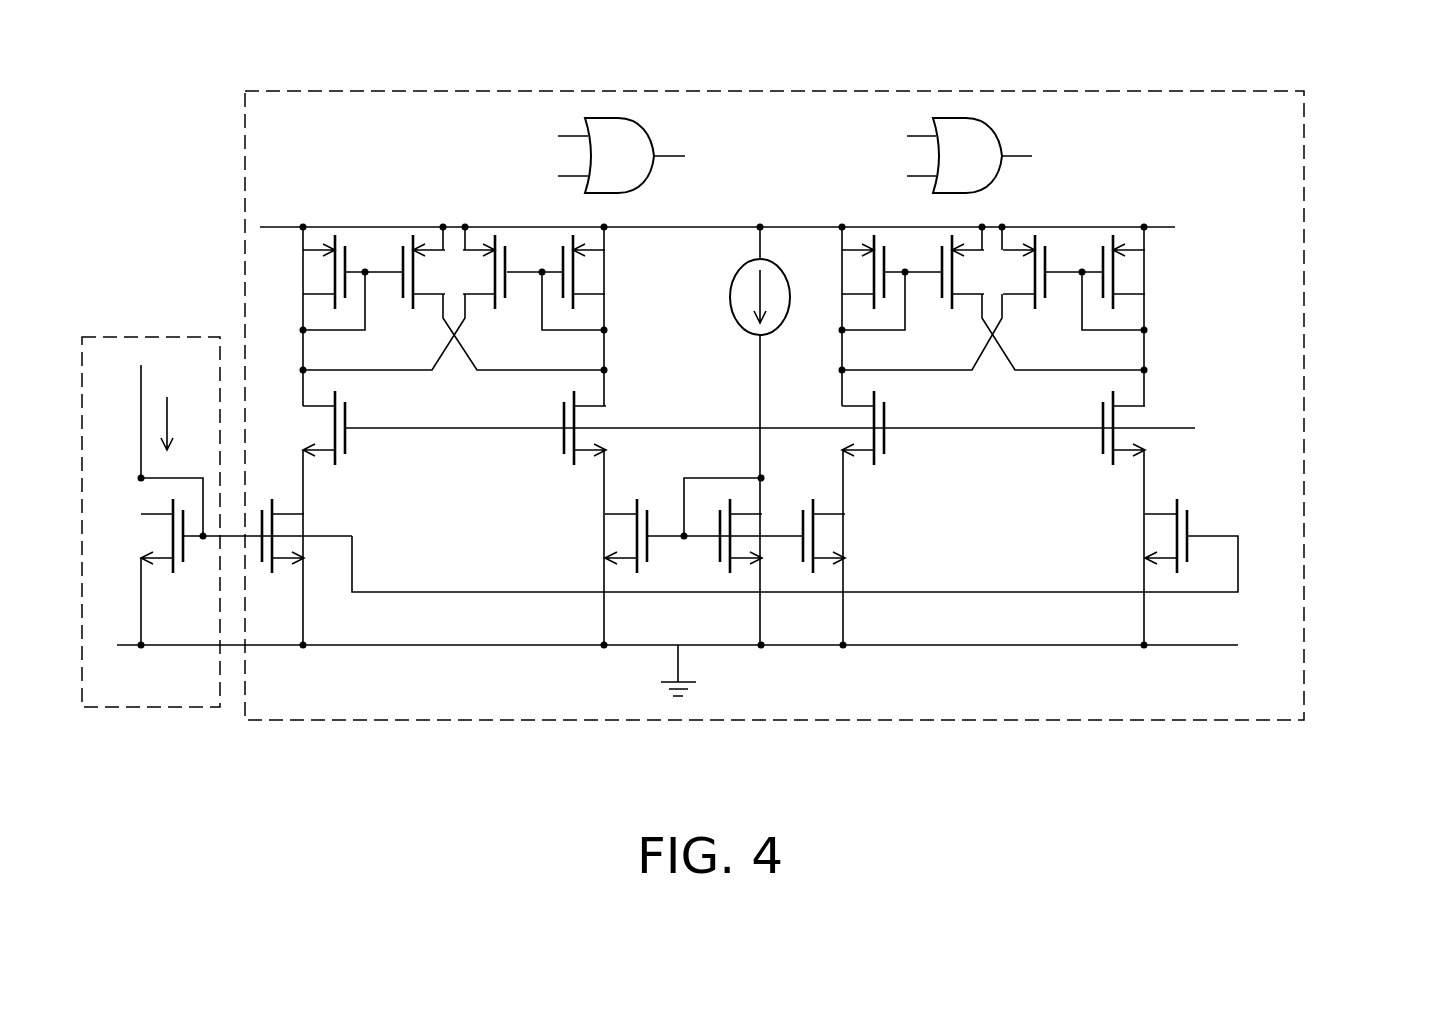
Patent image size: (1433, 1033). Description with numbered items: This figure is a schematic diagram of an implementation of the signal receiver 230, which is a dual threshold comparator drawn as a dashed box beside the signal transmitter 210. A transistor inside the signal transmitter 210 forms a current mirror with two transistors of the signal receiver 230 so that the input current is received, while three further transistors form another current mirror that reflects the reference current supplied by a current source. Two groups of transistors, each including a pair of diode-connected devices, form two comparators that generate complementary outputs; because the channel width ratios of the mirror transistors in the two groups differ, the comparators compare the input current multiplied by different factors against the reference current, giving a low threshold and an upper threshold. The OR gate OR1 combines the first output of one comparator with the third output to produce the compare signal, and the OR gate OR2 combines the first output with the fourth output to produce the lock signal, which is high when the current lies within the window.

The signal transmitter 210 is at (130, 337).
The signal receiver 230 is at (1304, 339).
The OR gate OR1 is at (642, 127).
The OR gate OR2 is at (985, 128).